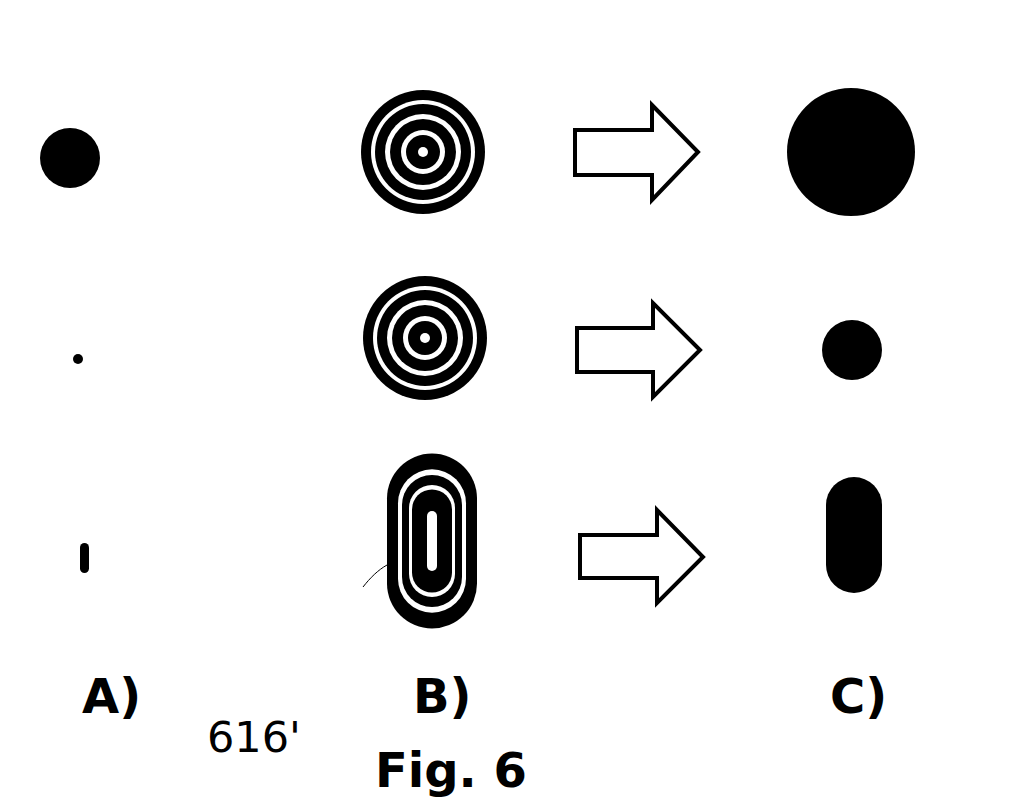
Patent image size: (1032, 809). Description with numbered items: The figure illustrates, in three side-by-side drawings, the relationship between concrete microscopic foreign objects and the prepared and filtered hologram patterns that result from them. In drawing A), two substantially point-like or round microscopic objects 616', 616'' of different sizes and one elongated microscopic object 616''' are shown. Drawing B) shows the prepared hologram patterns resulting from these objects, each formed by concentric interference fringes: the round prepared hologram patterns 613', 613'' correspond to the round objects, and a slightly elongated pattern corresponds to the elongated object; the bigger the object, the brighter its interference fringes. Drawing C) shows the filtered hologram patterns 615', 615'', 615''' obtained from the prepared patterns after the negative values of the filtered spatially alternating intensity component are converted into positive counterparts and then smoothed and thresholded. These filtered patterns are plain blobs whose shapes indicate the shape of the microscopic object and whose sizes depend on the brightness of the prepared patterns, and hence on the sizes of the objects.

The point-like microscopic object 616' is at (144, 114).
The point-like microscopic object 616'' is at (139, 325).
The elongated microscopic object 616''' is at (160, 535).
The prepared hologram pattern 613' is at (366, 169).
The prepared hologram pattern 613'' is at (367, 359).
The filtered hologram pattern 615' is at (823, 116).
The filtered hologram pattern 615'' is at (807, 314).
The filtered hologram pattern 615''' is at (808, 493).